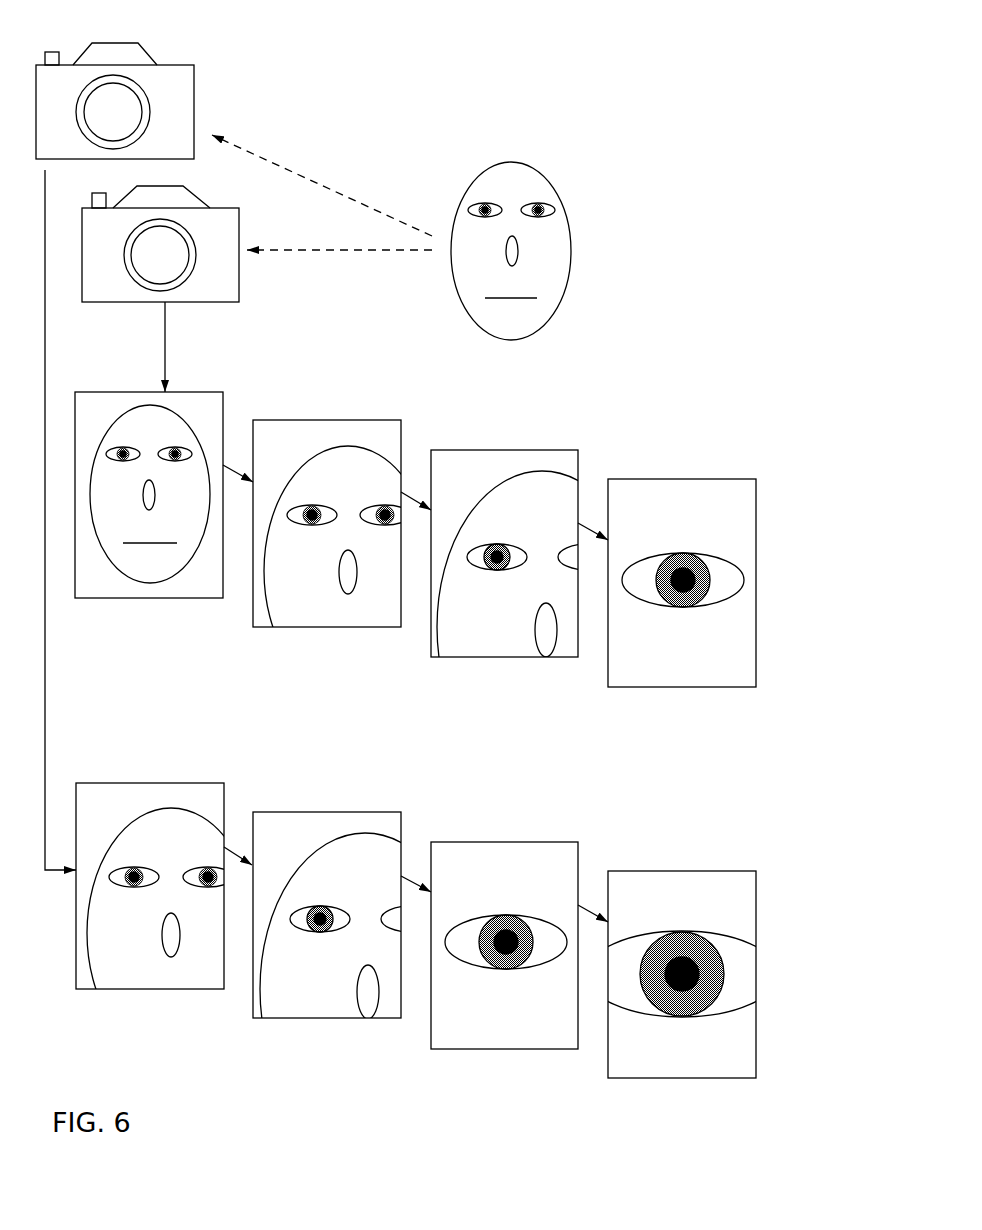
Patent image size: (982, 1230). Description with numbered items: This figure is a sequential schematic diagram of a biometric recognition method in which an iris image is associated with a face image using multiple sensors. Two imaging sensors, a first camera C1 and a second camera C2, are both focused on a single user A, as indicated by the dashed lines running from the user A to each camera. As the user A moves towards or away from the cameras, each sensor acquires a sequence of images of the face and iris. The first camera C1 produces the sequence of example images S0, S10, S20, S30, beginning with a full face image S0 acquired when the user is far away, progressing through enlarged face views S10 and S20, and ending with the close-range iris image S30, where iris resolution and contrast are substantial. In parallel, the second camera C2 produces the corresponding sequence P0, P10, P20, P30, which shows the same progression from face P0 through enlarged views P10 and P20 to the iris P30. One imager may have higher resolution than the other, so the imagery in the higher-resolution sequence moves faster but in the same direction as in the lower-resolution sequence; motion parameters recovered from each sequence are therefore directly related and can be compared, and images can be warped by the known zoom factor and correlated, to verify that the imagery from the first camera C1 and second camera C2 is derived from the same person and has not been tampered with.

The first sensor C1 is at (181, 244).
The second sensor C2 is at (139, 101).
The user A is at (533, 251).
The acquired image S0 is at (149, 510).
The acquired image S10 is at (342, 558).
The acquired image S20 is at (539, 616).
The acquired image S30 is at (682, 601).
The acquired image P0 is at (165, 920).
The acquired image P10 is at (361, 978).
The acquired image P20 is at (504, 961).
The acquired image P30 is at (682, 991).